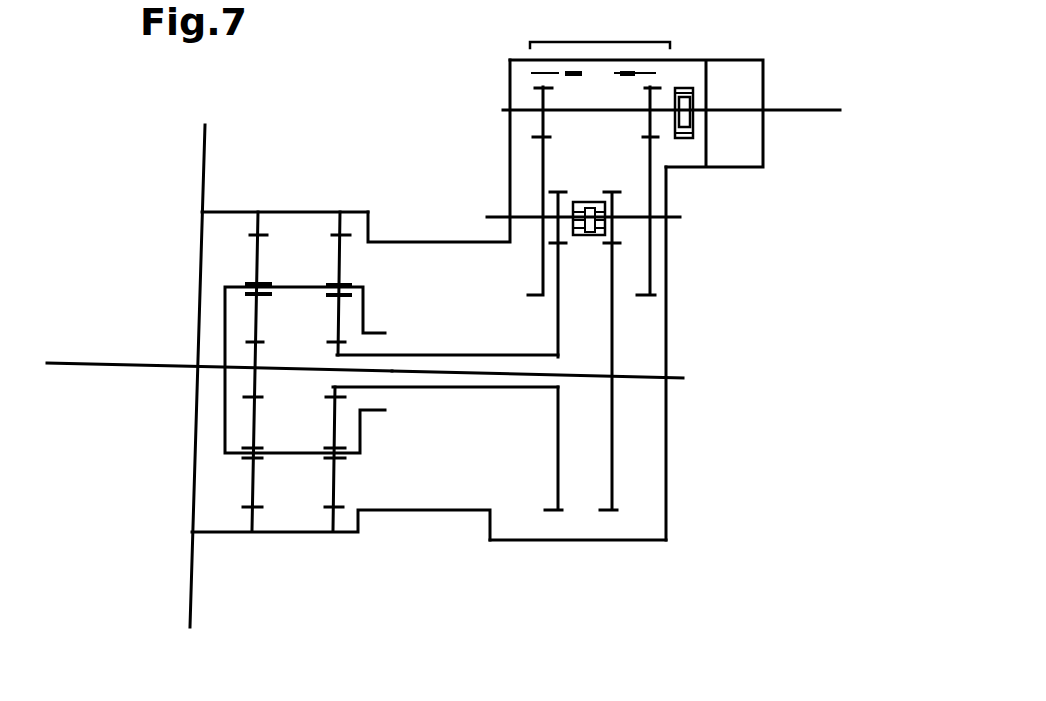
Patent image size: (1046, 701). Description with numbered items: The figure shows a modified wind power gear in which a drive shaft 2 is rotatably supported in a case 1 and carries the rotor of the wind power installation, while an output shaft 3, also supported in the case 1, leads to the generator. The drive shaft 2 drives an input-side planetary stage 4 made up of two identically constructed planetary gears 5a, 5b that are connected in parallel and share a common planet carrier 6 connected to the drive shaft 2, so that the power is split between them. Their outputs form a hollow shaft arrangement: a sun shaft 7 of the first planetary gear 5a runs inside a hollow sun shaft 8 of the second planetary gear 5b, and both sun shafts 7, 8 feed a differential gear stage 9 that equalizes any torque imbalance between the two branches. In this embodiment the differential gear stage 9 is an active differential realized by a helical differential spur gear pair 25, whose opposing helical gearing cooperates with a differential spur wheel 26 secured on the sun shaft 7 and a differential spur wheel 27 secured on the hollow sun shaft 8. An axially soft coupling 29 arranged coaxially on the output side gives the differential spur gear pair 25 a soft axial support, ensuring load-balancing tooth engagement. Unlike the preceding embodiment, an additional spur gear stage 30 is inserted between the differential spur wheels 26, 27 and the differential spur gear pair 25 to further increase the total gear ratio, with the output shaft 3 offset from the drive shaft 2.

The case 1 is at (392, 238).
The drive shaft 2 is at (83, 360).
The output shaft 3 is at (808, 110).
The planetary stage 4 is at (295, 192).
The first planetary gear 5a is at (251, 498).
The second planetary gear 5b is at (330, 497).
The planet carrier 6 is at (287, 292).
The sun shaft 7 is at (393, 372).
The hollow sun shaft 8 is at (473, 389).
The differential gear stage 9 is at (575, 560).
The differential spur gear pair 25 is at (636, 150).
The differential spur wheel 26 is at (612, 467).
The differential spur wheel 27 is at (558, 447).
The axially soft coupling 29 is at (683, 125).
The spur gear stage 30 is at (680, 220).